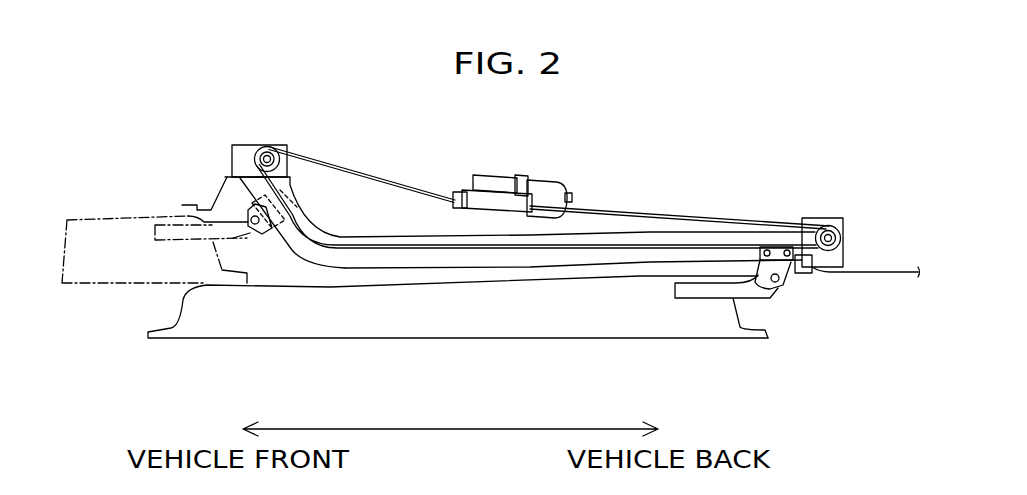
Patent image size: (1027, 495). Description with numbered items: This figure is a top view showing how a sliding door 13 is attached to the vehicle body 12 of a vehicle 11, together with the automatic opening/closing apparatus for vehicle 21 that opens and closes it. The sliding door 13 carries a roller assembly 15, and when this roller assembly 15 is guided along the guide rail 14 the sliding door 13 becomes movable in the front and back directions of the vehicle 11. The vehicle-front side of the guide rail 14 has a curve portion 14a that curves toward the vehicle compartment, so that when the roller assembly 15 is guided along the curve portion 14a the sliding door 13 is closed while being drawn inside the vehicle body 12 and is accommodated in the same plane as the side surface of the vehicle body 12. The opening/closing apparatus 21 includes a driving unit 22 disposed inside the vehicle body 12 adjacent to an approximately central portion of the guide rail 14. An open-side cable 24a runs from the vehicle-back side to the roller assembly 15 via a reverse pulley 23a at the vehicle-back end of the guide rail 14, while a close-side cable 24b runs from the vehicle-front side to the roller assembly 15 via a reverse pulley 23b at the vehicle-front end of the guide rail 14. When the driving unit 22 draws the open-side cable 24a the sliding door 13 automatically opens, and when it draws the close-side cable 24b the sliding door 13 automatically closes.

The vehicle 11 is at (866, 318).
The vehicle body 12 is at (885, 274).
The sliding door 13 is at (639, 322).
The guide rail 14 is at (315, 265).
The curve portion 14a is at (293, 240).
The roller assembly 15 is at (790, 270).
The automatic opening/closing apparatus for vehicle 21 is at (634, 141).
The driving unit 22 is at (546, 177).
The reverse pulley 23a is at (826, 224).
The reverse pulley 23b is at (267, 145).
The open-side cable 24a is at (673, 213).
The close-side cable 24b is at (353, 170).